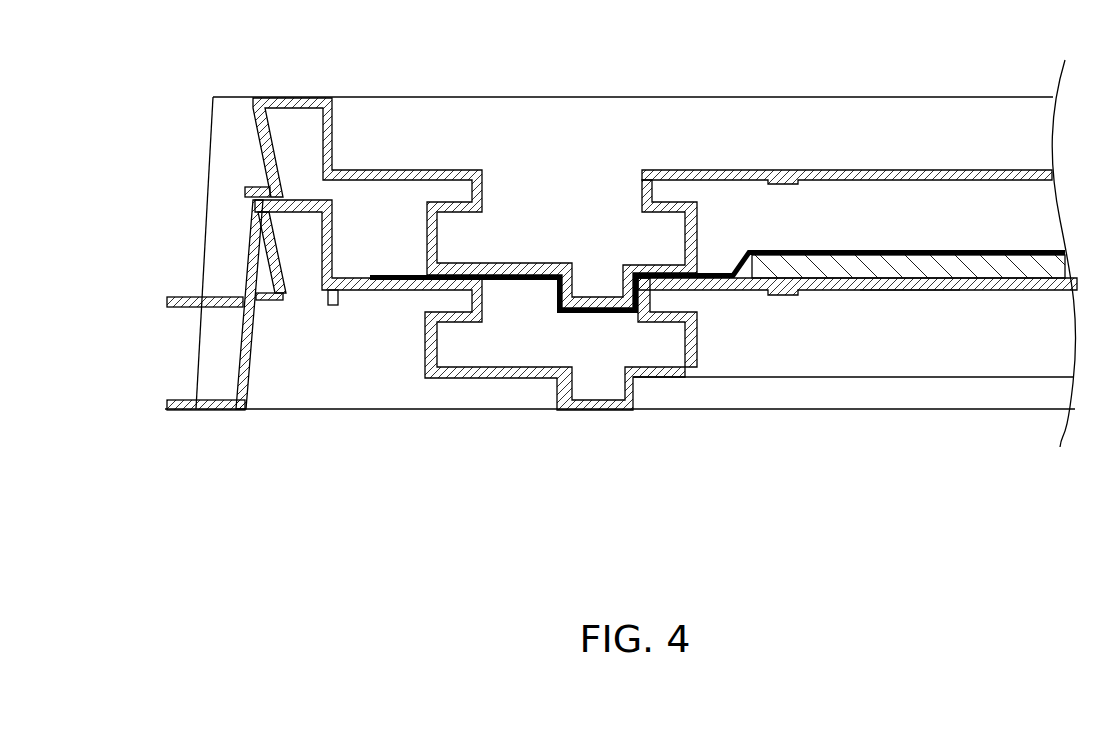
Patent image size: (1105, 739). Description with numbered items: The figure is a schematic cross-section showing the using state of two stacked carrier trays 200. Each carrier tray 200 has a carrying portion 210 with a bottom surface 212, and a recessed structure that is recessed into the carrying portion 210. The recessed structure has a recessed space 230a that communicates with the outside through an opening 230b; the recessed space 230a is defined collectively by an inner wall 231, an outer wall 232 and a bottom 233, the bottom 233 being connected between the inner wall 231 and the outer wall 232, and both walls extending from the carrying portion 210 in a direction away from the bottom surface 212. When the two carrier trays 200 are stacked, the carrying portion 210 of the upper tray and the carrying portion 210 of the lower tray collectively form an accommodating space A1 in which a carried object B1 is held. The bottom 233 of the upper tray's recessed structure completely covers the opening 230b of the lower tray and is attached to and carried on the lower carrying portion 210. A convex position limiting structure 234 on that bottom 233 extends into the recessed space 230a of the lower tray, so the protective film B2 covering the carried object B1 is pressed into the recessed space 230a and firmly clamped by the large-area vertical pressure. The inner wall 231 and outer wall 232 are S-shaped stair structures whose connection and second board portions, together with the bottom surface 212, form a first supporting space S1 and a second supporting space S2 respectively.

The carrier tray 200 is at (154, 190).
The carrying portion 210 is at (866, 170).
The bottom surface 212 is at (930, 294).
The recessed space 230a is at (584, 208).
The opening 230b is at (486, 155).
The inner wall 231 is at (705, 362).
The outer wall 232 is at (417, 370).
The bottom 233 is at (522, 268).
The position limiting structure 234 is at (606, 316).
The first supporting space S1 is at (699, 302).
The second supporting space S2 is at (425, 302).
The accommodating space A1 is at (965, 202).
The carried object B1 is at (977, 278).
The protective film B2 is at (793, 248).